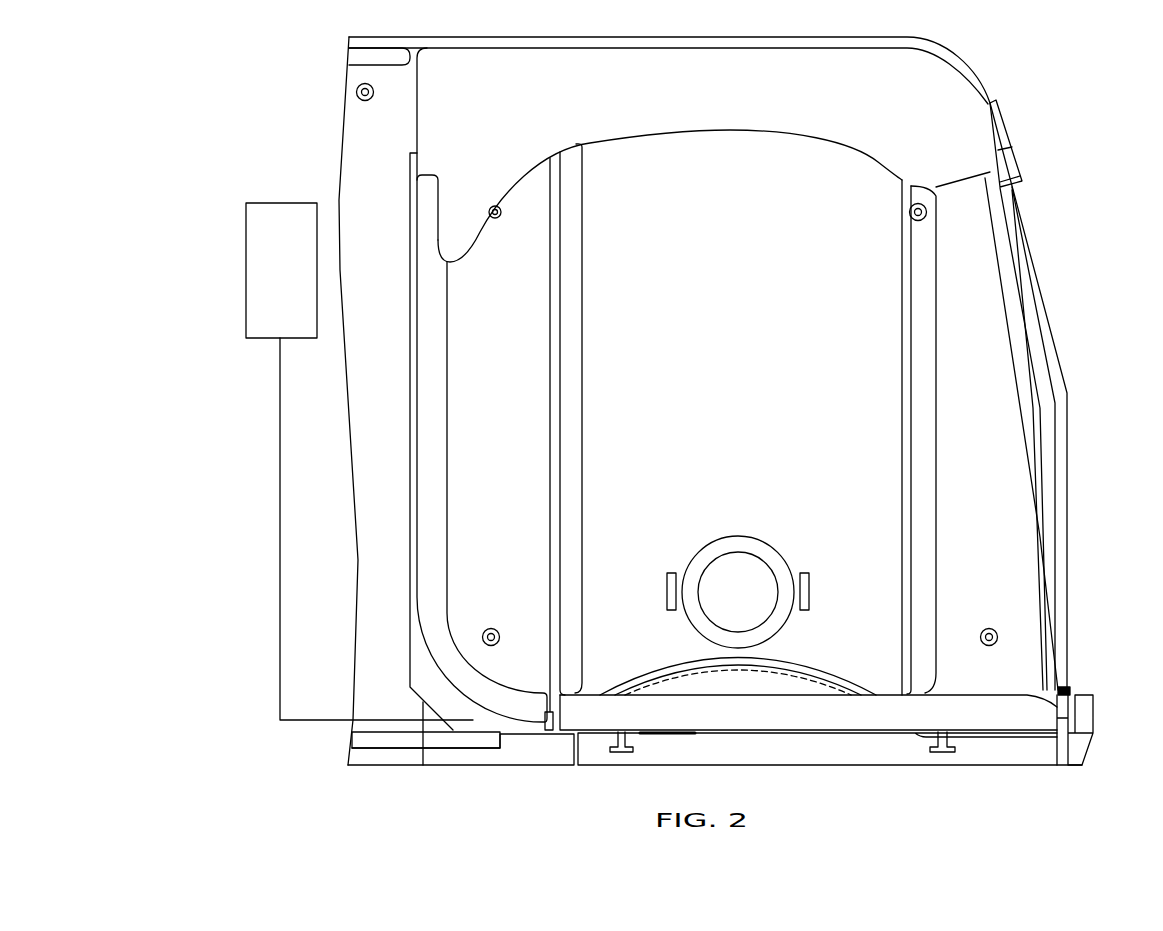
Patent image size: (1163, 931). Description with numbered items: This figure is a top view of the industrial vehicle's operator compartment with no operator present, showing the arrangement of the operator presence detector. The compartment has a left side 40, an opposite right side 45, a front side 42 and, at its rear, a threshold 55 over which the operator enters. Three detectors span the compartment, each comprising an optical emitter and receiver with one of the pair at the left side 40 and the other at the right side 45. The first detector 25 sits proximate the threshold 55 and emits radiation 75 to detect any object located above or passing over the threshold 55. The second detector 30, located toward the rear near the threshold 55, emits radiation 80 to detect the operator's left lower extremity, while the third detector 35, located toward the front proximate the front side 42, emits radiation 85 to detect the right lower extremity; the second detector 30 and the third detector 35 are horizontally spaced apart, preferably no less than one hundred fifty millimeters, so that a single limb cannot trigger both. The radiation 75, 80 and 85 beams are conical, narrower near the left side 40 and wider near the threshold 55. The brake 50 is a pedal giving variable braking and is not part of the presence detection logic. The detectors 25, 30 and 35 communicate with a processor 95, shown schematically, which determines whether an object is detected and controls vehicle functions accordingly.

The first detector 25 is at (1100, 184).
The second detector 30 is at (937, 418).
The third detector 35 is at (582, 395).
The left side 40 is at (863, 594).
The front side 42 is at (461, 512).
The right side 45 is at (707, 159).
The brake 50 is at (740, 563).
The threshold 55 is at (1053, 368).
The radiation 75 is at (1027, 393).
The radiation 80 is at (908, 435).
The radiation 85 is at (553, 468).
The processor 95 is at (246, 270).